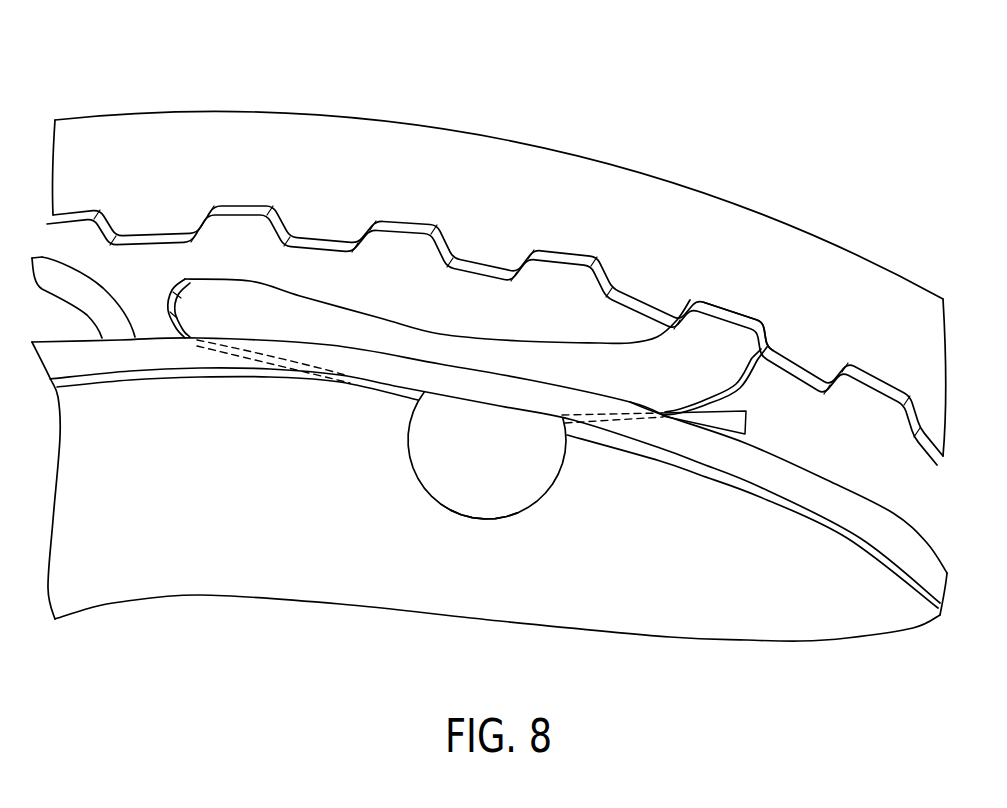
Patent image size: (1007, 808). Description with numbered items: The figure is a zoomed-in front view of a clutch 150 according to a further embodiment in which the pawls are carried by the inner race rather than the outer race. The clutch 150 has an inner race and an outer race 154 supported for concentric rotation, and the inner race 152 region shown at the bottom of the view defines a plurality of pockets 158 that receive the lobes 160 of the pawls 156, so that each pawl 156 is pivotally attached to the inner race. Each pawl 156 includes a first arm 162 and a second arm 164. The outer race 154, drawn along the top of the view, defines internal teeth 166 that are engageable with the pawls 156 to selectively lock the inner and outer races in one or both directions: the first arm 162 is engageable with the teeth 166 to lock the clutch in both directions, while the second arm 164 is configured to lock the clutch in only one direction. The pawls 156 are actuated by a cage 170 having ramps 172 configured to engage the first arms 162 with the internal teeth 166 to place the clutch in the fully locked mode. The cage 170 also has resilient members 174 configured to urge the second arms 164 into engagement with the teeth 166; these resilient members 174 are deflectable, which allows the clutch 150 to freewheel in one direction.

The clutch 150 is at (793, 119).
The lower ring body 152 is at (686, 627).
The outer race 154 is at (547, 178).
The pawls 156 is at (438, 340).
The pockets 158 is at (518, 514).
The lobes 160 is at (445, 486).
The first arm 162 is at (747, 333).
The second arm 164 is at (178, 299).
The internal teeth 166 is at (157, 227).
The cage 170 is at (870, 508).
The ramps 172 is at (729, 428).
The resilient members 174 is at (60, 275).